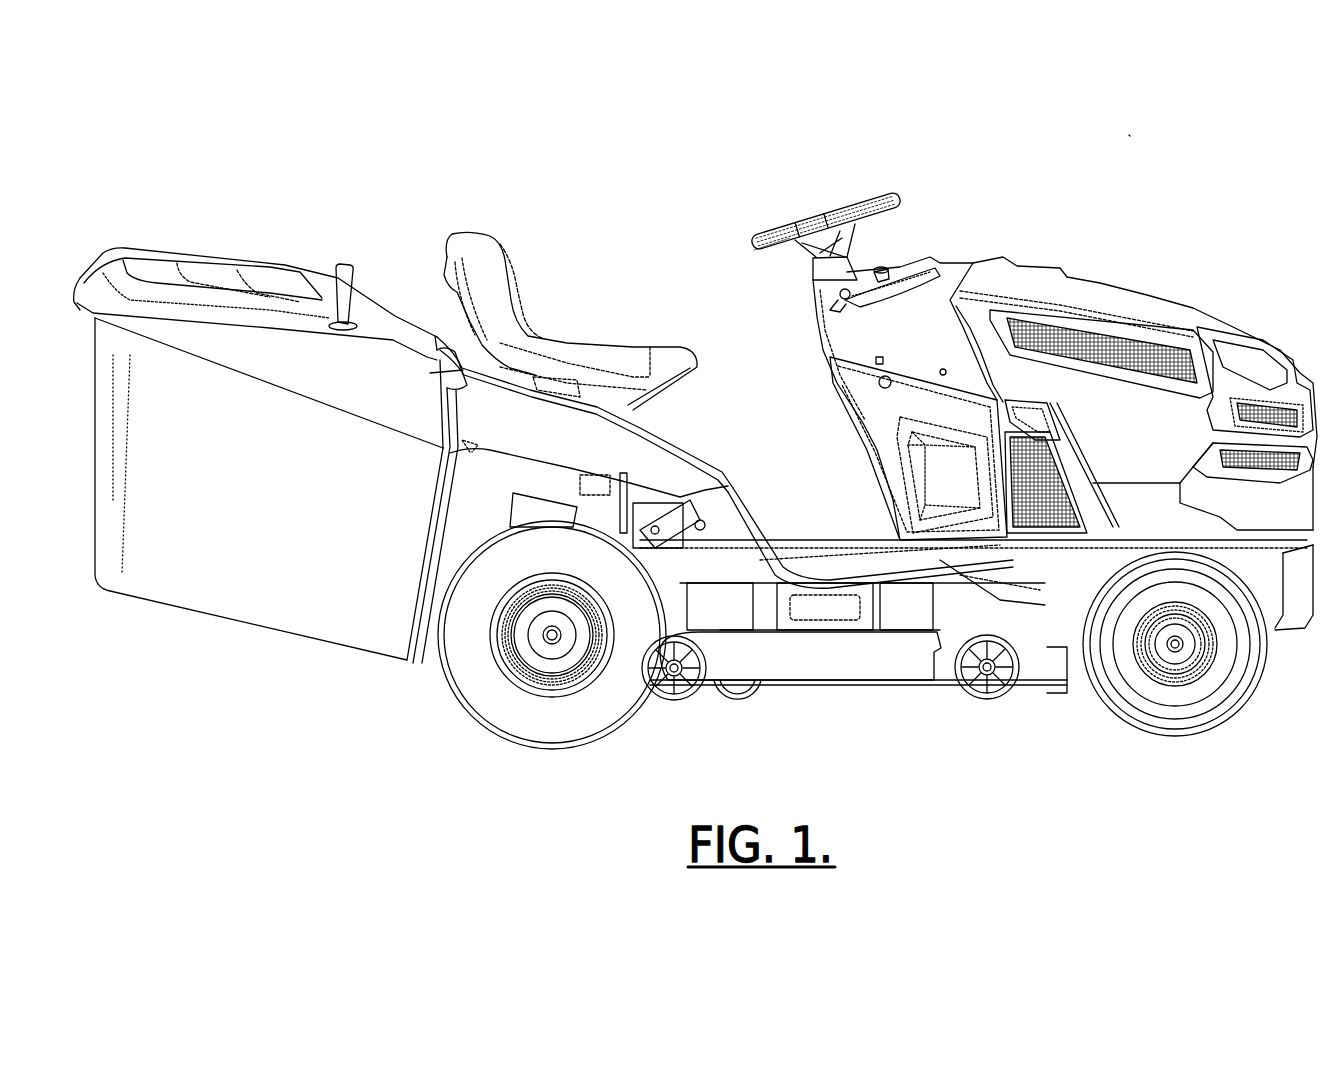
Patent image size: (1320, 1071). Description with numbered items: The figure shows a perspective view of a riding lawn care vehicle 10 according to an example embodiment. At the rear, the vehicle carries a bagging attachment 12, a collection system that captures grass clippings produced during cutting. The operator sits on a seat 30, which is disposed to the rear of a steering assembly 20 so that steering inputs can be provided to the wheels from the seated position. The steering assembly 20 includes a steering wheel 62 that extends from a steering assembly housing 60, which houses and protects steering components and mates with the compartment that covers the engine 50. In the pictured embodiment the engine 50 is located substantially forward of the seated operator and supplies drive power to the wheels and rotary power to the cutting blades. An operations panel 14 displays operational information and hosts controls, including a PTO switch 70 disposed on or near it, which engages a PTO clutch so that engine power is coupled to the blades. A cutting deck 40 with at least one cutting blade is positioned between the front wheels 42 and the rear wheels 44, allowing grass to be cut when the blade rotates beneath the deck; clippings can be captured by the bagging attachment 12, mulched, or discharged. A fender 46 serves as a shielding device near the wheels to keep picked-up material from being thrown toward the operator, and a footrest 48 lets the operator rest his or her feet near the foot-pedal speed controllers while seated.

The riding lawn care vehicle 10 is at (1130, 134).
The bagging attachment 12 is at (191, 238).
The operations panel 14 is at (920, 320).
The steering assembly 20 is at (830, 188).
The seat 30 is at (488, 245).
The cutting deck 40 is at (862, 668).
The front wheels 42 is at (1220, 690).
The rear wheels 44 is at (600, 713).
The fender 46 is at (440, 352).
The footrest 48 is at (867, 540).
The engine 50 is at (1207, 300).
The steering assembly housing 60 is at (797, 317).
The steering wheel 62 is at (760, 235).
The PTO switch 70 is at (883, 262).